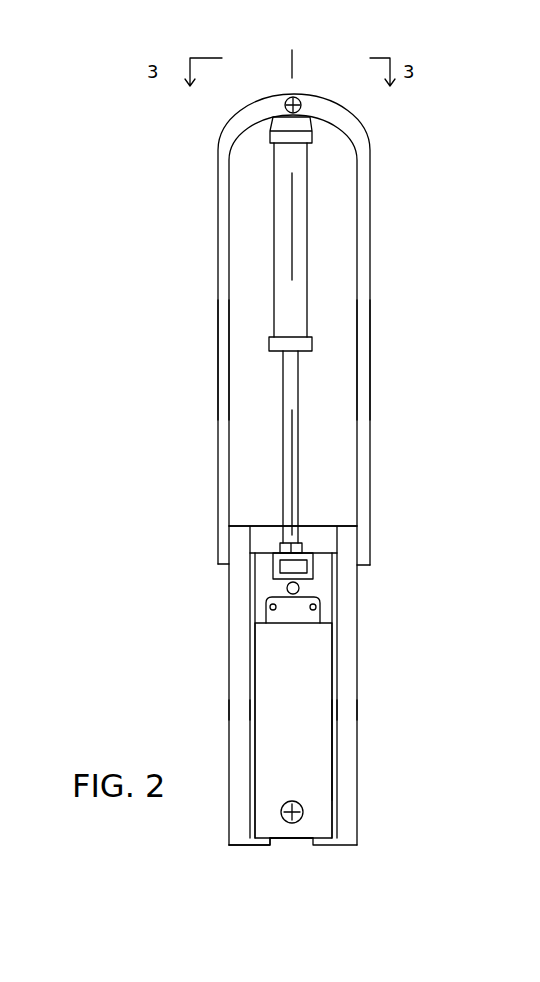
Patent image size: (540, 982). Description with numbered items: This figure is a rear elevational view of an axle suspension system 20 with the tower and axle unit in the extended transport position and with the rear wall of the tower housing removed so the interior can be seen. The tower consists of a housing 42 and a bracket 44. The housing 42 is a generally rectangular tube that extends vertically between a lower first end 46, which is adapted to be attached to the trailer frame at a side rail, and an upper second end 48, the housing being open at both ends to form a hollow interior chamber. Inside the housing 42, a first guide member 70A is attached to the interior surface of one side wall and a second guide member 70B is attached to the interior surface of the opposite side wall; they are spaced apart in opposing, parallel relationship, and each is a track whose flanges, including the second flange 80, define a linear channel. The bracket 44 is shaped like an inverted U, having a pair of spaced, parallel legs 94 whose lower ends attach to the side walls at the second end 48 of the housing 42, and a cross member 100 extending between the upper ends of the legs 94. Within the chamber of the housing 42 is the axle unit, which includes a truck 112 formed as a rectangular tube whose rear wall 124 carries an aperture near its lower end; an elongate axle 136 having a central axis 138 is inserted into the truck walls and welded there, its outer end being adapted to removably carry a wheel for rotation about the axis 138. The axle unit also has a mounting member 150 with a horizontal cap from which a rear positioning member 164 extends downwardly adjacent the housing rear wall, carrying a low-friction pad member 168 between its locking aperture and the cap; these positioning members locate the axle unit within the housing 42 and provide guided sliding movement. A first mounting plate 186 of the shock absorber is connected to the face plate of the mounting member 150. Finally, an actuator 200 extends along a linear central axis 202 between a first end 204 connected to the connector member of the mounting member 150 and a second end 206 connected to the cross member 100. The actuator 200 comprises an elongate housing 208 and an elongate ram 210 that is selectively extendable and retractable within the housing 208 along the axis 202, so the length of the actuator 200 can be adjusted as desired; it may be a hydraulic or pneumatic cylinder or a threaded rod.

The axle suspension system 20 is at (488, 161).
The housing 42 is at (221, 609).
The bracket 44 is at (211, 310).
The lower first end 46 is at (258, 845).
The upper second end 48 is at (243, 526).
The first guide member 70A is at (357, 683).
The second guide member 70B is at (245, 677).
The second flange 80 is at (345, 708).
The legs 94 is at (360, 366).
The cross member 100 is at (247, 115).
The truck 112 is at (329, 757).
The rear wall 124 is at (272, 740).
The axle 136 is at (293, 823).
The central axis 138 is at (302, 816).
The mounting member 150 is at (320, 553).
The rear positioning member 164 is at (312, 586).
The low-friction pad member 168 is at (300, 568).
The first mounting plate 186 is at (306, 615).
The actuator 200 is at (316, 311).
The central axis 202 is at (292, 62).
The first end 204 is at (300, 548).
The second end 206 is at (300, 122).
The housing 208 is at (307, 252).
The ram 210 is at (298, 443).